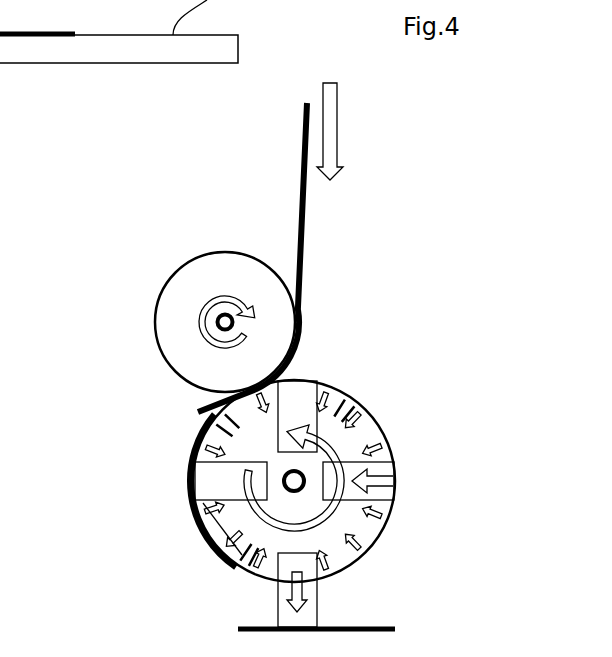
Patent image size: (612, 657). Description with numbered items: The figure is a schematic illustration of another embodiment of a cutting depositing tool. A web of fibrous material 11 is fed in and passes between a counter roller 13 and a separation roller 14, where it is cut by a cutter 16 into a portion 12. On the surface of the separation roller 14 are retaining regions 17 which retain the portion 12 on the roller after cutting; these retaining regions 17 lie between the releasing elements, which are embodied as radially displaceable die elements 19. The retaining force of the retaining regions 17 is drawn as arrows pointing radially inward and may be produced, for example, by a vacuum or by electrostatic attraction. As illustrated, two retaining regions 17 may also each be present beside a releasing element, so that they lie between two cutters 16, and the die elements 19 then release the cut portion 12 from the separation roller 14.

The fibrous material 11 is at (308, 232).
The portion 12 is at (187, 452).
The counter roller 13 is at (201, 250).
The separation roller 14 is at (383, 425).
The cutter 16 is at (362, 400).
The retaining region 17 is at (193, 527).
The die element 19 is at (303, 377).